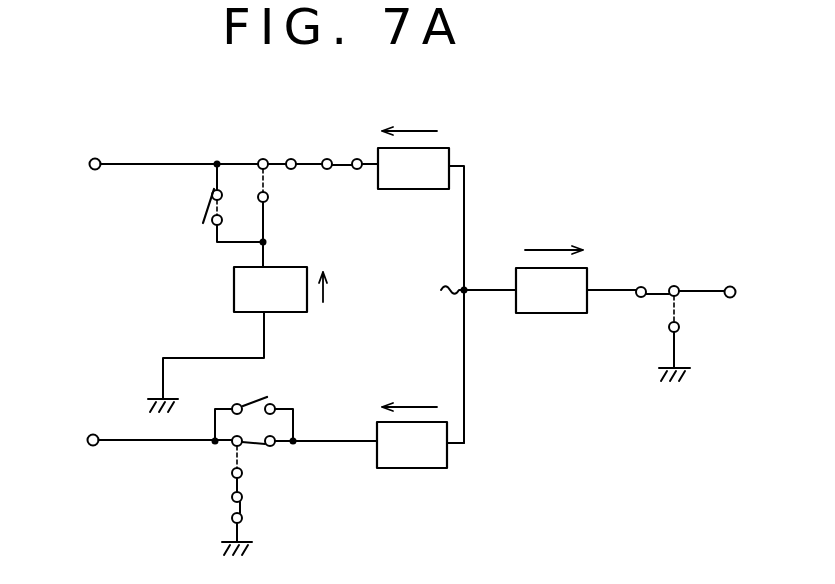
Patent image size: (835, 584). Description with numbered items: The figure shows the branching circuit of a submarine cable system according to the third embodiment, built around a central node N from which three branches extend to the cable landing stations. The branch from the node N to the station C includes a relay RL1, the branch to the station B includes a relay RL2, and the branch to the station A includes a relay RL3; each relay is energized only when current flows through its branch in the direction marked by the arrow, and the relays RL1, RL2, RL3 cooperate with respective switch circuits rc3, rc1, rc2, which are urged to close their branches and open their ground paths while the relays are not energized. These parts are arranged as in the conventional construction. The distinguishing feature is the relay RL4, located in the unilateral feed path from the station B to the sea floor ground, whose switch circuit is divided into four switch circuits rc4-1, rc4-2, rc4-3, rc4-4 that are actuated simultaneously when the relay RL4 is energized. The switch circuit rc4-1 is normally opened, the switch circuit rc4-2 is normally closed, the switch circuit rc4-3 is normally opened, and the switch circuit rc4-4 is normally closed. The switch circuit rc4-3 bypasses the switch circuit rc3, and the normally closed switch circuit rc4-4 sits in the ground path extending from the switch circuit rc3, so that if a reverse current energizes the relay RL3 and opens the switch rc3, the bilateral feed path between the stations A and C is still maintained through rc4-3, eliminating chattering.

The cable landing station B is at (158, 165).
The cable landing station C is at (145, 441).
The cable landing station A is at (724, 293).
The central node N is at (443, 291).
The relay RL1 is at (369, 435).
The relay RL2 is at (421, 285).
The relay RL3 is at (550, 279).
The relay RL4 is at (237, 327).
The switch circuit rc1 is at (285, 200).
The switch circuit rc2 is at (682, 333).
The switch circuit rc3 is at (262, 464).
The switch circuit rc4-1 is at (172, 203).
The switch circuit rc4-2 is at (345, 190).
The switch circuit rc4-3 is at (282, 407).
The switch circuit rc4-4 is at (271, 523).